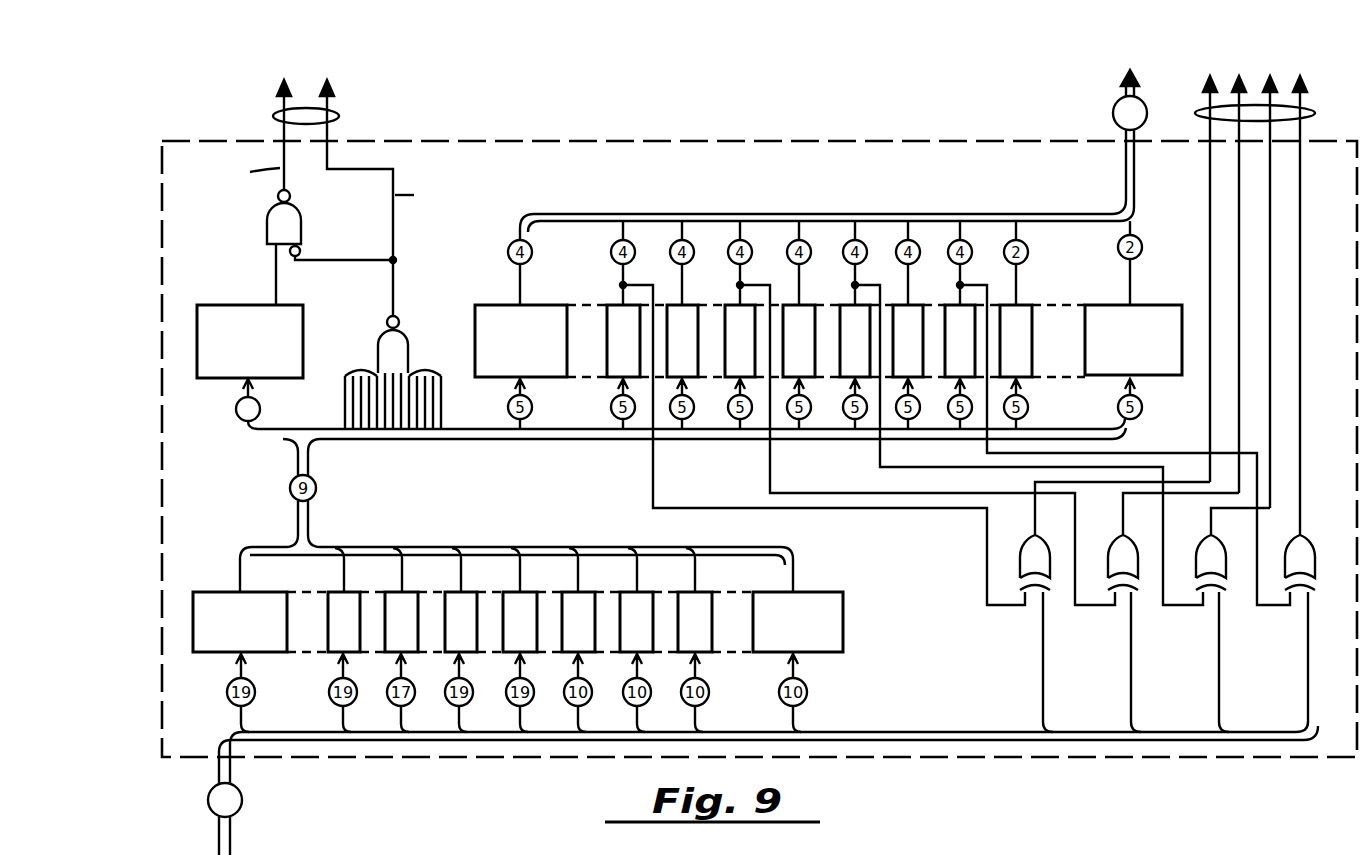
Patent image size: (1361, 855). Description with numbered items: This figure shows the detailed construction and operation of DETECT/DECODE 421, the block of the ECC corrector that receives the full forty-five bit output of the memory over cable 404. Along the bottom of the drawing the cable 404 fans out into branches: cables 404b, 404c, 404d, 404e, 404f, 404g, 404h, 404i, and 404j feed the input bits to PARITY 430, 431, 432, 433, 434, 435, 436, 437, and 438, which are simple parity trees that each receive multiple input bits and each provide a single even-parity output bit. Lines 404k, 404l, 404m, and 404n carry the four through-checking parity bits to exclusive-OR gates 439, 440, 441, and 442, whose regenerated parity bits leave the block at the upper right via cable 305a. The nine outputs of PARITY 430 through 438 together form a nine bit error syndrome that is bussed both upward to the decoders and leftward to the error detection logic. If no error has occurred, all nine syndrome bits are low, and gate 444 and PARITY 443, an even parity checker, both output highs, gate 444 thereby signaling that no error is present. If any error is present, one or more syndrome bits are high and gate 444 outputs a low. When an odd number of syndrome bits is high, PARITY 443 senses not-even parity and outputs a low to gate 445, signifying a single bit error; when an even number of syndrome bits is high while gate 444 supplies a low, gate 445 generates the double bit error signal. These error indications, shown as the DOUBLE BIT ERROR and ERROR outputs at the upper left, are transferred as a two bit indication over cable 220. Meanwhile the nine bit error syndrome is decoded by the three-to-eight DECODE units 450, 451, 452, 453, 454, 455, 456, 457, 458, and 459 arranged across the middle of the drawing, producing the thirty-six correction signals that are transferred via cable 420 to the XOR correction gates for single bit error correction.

The cable 220 is at (339, 113).
The DETECT/DECODE 421 is at (695, 140).
The cable 420 is at (1116, 126).
The cable 305a is at (1197, 113).
The gate 445 is at (302, 210).
The PARITY 443 is at (245, 303).
The gate 444 is at (378, 338).
The 3 TO 8 DECODE 450 is at (500, 303).
The 3 TO 8 DECODE 451 is at (612, 303).
The 3 TO 8 DECODE 452 is at (678, 303).
The 3 TO 8 DECODE 453 is at (734, 303).
The 3 TO 8 DECODE 454 is at (790, 303).
The 3 TO 8 DECODE 455 is at (848, 303).
The 3 TO 8 DECODE 456 is at (901, 303).
The 3 TO 8 DECODE 457 is at (953, 303).
The 3 TO 8 DECODE 458 is at (1008, 303).
The 3 TO 8 DECODE 459 is at (1108, 303).
The PARITY 430 is at (228, 592).
The PARITY 431 is at (335, 591).
The PARITY 432 is at (393, 591).
The PARITY 433 is at (452, 591).
The PARITY 434 is at (509, 591).
The PARITY 435 is at (569, 591).
The PARITY 436 is at (626, 591).
The PARITY 437 is at (685, 591).
The PARITY 438 is at (780, 592).
The exclusive-OR gate 439 is at (1050, 574).
The exclusive-OR gate 440 is at (1138, 574).
The exclusive-OR gate 441 is at (1226, 574).
The exclusive-OR gate 442 is at (1315, 574).
The cable 404 is at (232, 828).
The cable 404b is at (238, 720).
The cable 404c is at (340, 720).
The cable 404d is at (398, 720).
The cable 404e is at (456, 720).
The cable 404f is at (517, 720).
The cable 404g is at (575, 720).
The cable 404h is at (634, 720).
The cable 404i is at (692, 720).
The cable 404j is at (790, 720).
The line 404k is at (1040, 717).
The line 404l is at (1128, 717).
The line 404m is at (1216, 717).
The line 404n is at (1305, 717).